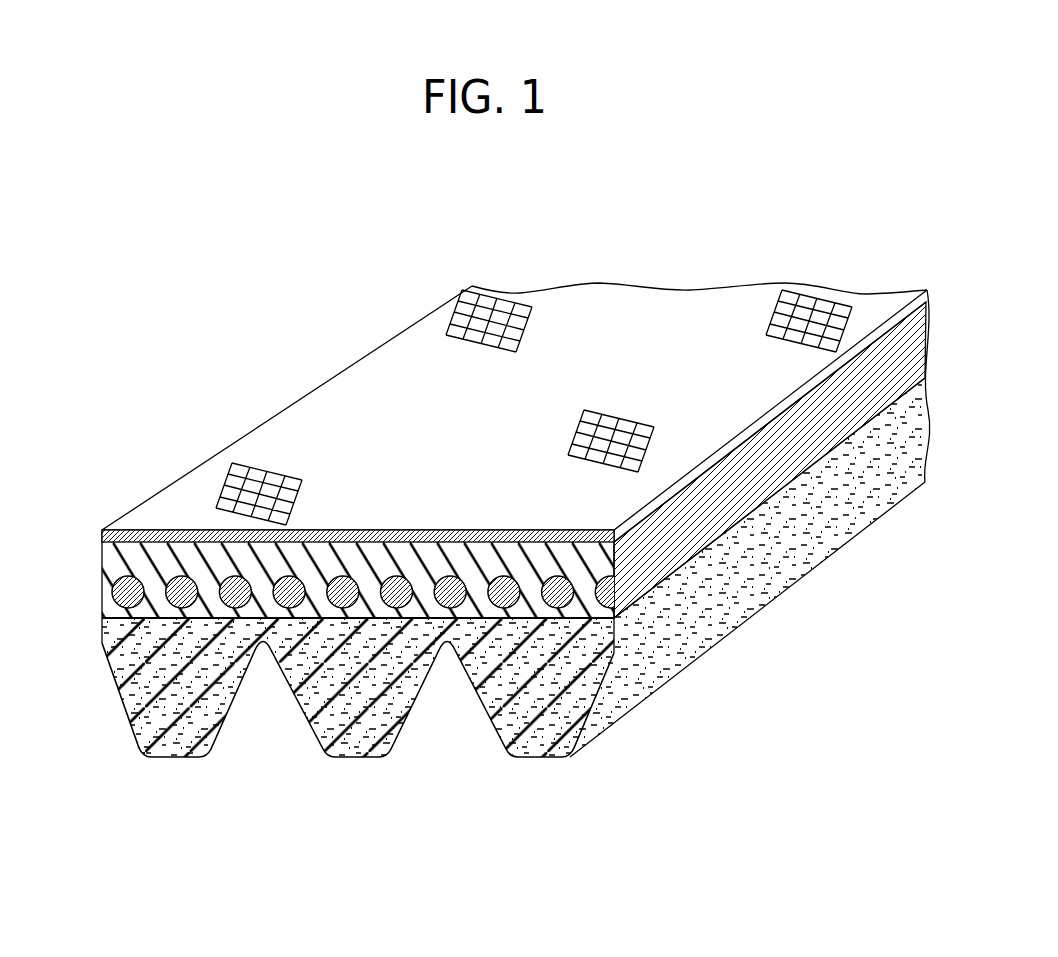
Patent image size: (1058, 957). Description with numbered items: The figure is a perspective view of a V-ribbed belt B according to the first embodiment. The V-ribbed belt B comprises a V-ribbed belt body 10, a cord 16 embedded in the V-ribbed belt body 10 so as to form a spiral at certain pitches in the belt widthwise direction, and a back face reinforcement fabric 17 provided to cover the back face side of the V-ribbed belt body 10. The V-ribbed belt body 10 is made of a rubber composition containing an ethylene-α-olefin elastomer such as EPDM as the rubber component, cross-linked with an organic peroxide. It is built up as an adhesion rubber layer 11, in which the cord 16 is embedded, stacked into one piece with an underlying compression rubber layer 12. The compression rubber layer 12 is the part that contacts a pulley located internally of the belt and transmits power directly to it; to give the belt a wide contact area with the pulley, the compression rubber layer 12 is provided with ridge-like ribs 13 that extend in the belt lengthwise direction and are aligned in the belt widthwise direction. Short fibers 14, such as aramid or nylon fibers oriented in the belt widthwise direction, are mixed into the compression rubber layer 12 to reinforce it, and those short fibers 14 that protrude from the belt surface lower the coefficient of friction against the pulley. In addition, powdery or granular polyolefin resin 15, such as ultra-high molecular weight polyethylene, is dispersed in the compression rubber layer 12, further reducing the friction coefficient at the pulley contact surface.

The V-ribbed belt B is at (443, 232).
The V-ribbed belt body 10 is at (681, 671).
The adhesion rubber layer 11 is at (139, 553).
The compression rubber layer 12 is at (118, 634).
The ribs 13 is at (173, 747).
The short fibers 14 is at (165, 666).
The polyolefin resin 15 is at (138, 740).
The cord 16 is at (112, 590).
The back face reinforcement fabric 17 is at (268, 418).